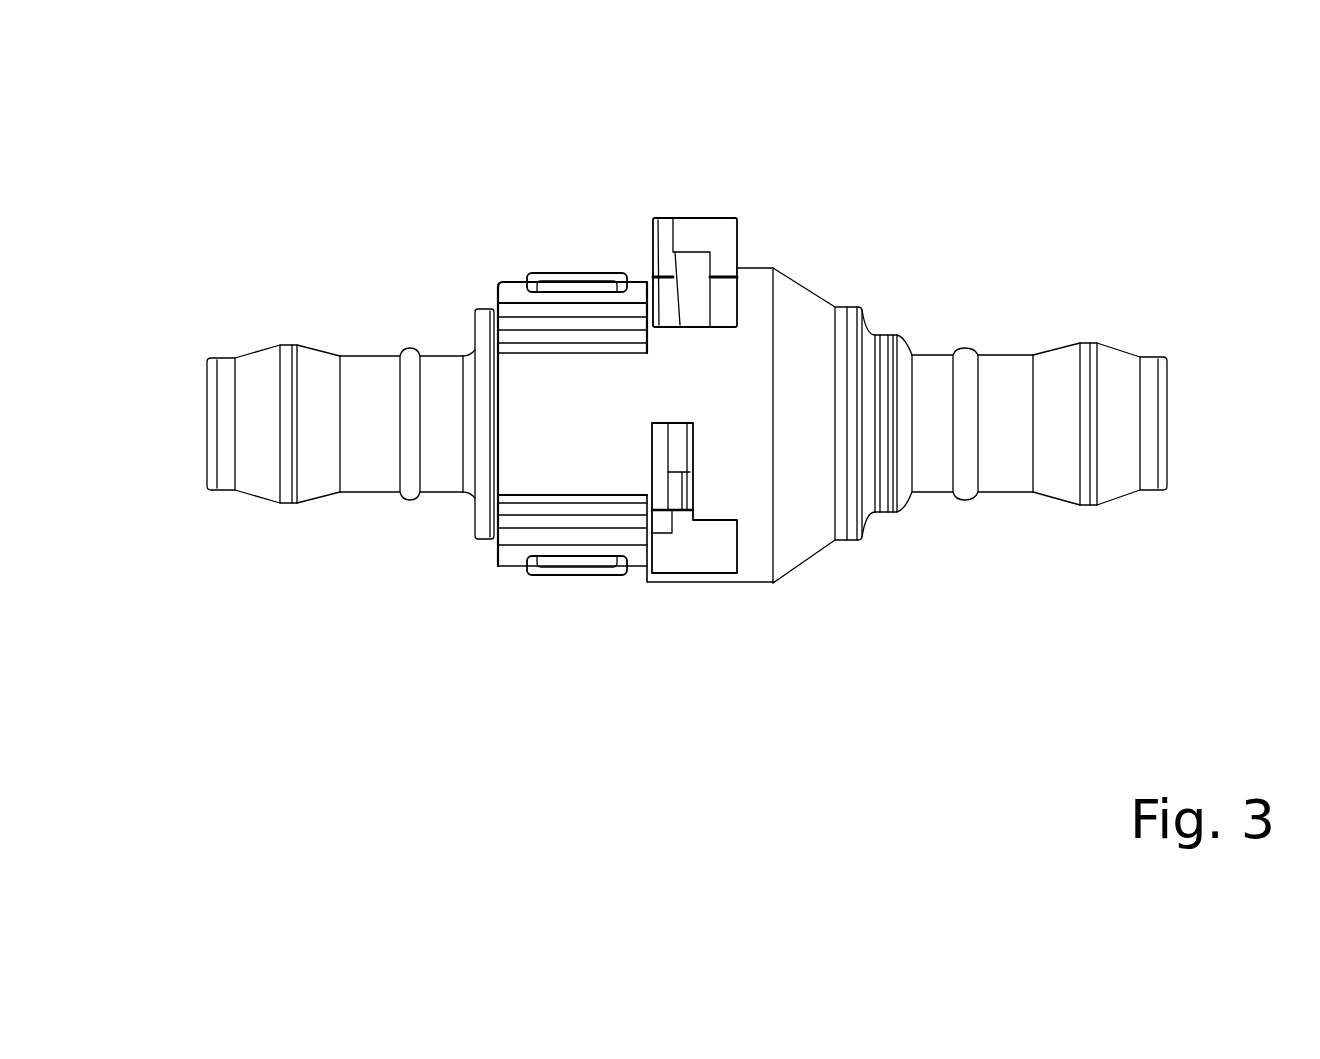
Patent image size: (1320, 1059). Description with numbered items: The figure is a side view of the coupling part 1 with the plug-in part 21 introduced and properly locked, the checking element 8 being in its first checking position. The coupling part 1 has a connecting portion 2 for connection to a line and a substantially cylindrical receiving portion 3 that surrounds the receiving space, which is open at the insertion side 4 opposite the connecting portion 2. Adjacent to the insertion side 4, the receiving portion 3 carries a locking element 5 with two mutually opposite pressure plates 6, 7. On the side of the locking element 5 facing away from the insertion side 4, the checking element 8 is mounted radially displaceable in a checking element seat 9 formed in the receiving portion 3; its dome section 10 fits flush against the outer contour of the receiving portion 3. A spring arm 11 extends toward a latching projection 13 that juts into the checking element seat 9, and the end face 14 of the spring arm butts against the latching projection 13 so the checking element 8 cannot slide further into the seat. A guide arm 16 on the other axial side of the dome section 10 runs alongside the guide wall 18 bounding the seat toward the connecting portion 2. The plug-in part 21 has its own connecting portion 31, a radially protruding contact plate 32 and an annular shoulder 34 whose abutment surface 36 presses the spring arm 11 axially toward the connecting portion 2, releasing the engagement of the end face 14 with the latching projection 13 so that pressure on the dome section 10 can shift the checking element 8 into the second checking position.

The coupling part 1 is at (920, 318).
The connecting portion 2 is at (1060, 368).
The receiving portion 3 is at (743, 382).
The insertion side 4 is at (590, 405).
The locking element 5 is at (553, 260).
The pressure plate 6 is at (589, 278).
The pressure plate 7 is at (550, 572).
The checking element 8 is at (683, 205).
The checking element seat 9 is at (685, 590).
The dome section 10 is at (708, 232).
The spring arm 11 is at (667, 458).
The latching projection 13 is at (662, 525).
The end face 14 is at (683, 513).
The guide arm 16 is at (740, 297).
The guide wall 18 is at (723, 300).
The plug-in part 21 is at (334, 536).
The connecting portion 31 is at (312, 467).
The contact plate 32 is at (485, 337).
The annular shoulder 34 is at (655, 443).
The abutment surface 36 is at (670, 490).